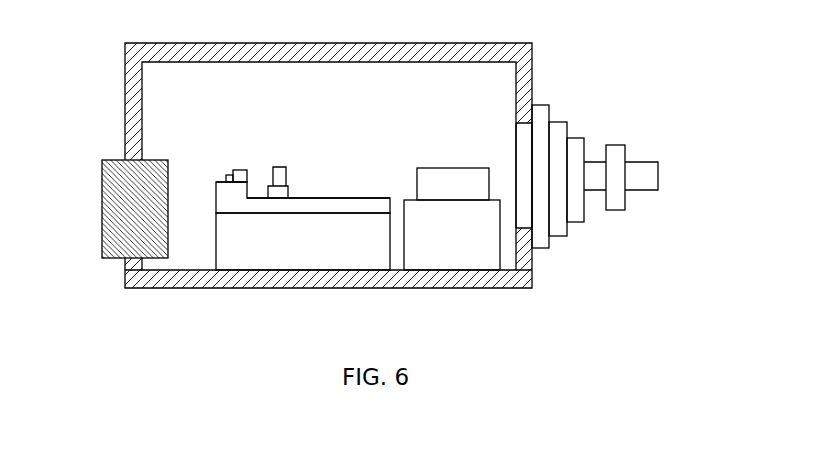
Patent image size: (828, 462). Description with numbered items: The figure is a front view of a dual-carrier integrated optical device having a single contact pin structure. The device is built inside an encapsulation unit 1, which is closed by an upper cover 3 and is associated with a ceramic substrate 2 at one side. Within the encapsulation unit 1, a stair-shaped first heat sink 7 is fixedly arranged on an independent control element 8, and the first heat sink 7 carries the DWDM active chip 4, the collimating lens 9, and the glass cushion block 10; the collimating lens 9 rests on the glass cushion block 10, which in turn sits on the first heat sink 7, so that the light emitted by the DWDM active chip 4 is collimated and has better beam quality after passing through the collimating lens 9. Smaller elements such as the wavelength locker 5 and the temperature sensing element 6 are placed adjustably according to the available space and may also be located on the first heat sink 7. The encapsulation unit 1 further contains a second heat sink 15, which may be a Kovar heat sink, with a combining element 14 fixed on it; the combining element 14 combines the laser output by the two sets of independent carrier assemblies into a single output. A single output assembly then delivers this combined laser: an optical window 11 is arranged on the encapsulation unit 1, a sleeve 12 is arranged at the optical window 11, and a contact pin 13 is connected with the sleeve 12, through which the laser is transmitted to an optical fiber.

The encapsulation unit 1 is at (153, 288).
The ceramic substrate 2 is at (103, 224).
The upper cover of an encapsulation unit 3 is at (253, 43).
The DWDM active chip 4 is at (243, 170).
The wavelength locker 5 is at (228, 175).
The temperature sensing element 6 is at (223, 181).
The first heat sink 7 is at (216, 203).
The independent control element 8 is at (216, 252).
The collimating lens 9 is at (283, 168).
The glass cushion block 10 is at (289, 192).
The optical window 11 is at (532, 147).
The sleeve 12 is at (567, 133).
The contact pin 13 is at (623, 163).
The combining element 14 is at (479, 168).
The second heat sink 15 is at (412, 197).